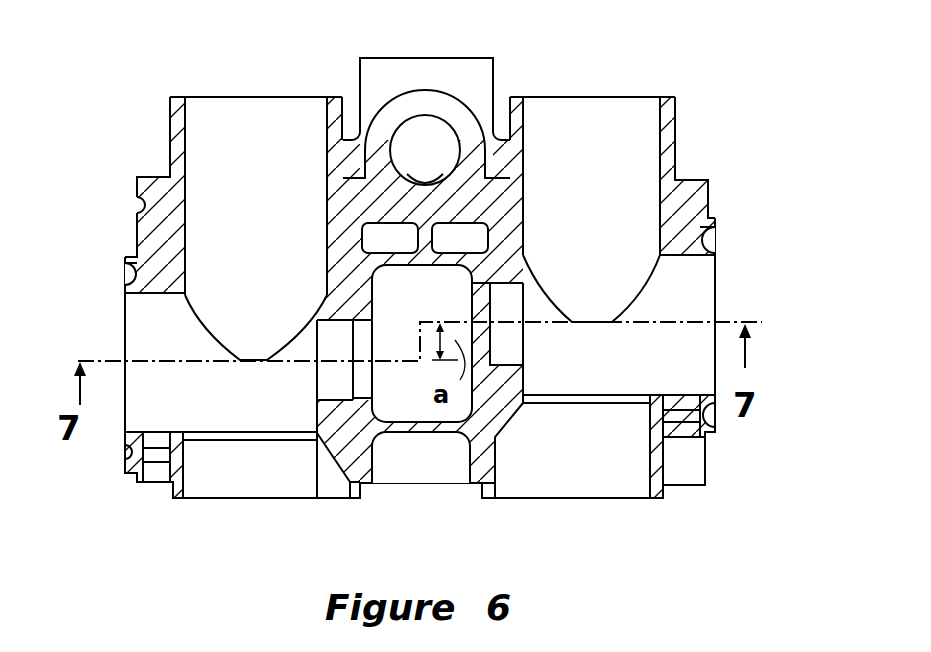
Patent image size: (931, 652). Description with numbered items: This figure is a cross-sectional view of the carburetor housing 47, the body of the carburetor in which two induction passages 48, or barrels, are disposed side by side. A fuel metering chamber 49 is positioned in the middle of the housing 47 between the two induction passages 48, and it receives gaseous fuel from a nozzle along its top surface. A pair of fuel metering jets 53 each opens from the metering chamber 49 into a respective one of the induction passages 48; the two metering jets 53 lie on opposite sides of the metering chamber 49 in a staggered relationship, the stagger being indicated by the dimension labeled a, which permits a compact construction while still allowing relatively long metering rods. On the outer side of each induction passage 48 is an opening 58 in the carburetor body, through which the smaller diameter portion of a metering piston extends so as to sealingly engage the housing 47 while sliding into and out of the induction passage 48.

The housing 47 is at (641, 74).
The induction passage 48 is at (200, 138).
The fuel metering chamber 49 is at (422, 412).
The fuel metering jet 53 is at (313, 337).
The opening 58 is at (133, 308).